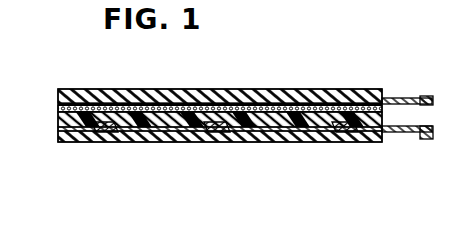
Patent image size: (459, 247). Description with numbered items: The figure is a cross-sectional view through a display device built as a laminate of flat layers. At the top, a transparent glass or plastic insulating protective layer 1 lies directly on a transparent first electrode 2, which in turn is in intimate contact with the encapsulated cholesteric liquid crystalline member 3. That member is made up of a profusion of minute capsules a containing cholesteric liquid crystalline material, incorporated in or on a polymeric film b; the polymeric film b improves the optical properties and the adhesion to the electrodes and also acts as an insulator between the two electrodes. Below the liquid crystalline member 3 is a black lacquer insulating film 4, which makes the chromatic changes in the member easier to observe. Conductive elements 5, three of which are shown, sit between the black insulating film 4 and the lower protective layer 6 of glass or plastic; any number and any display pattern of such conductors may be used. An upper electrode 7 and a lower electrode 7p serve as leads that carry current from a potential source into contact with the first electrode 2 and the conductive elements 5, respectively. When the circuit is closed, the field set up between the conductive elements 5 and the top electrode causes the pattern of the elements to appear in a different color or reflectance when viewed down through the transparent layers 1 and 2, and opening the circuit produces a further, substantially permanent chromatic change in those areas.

The transparent insulating protective layer 1 is at (321, 97).
The transparent first electrode 2 is at (74, 107).
The encapsulated cholesteric liquid crystalline member 3 is at (58, 108).
The capsules a is at (181, 107).
The polymeric film b is at (233, 107).
The black lacquer insulating film 4 is at (382, 120).
The conductive elements 5 is at (103, 132).
The lower protective layer 6 is at (265, 141).
The upper electrode 7 is at (425, 97).
The lower electrode 7p is at (428, 138).